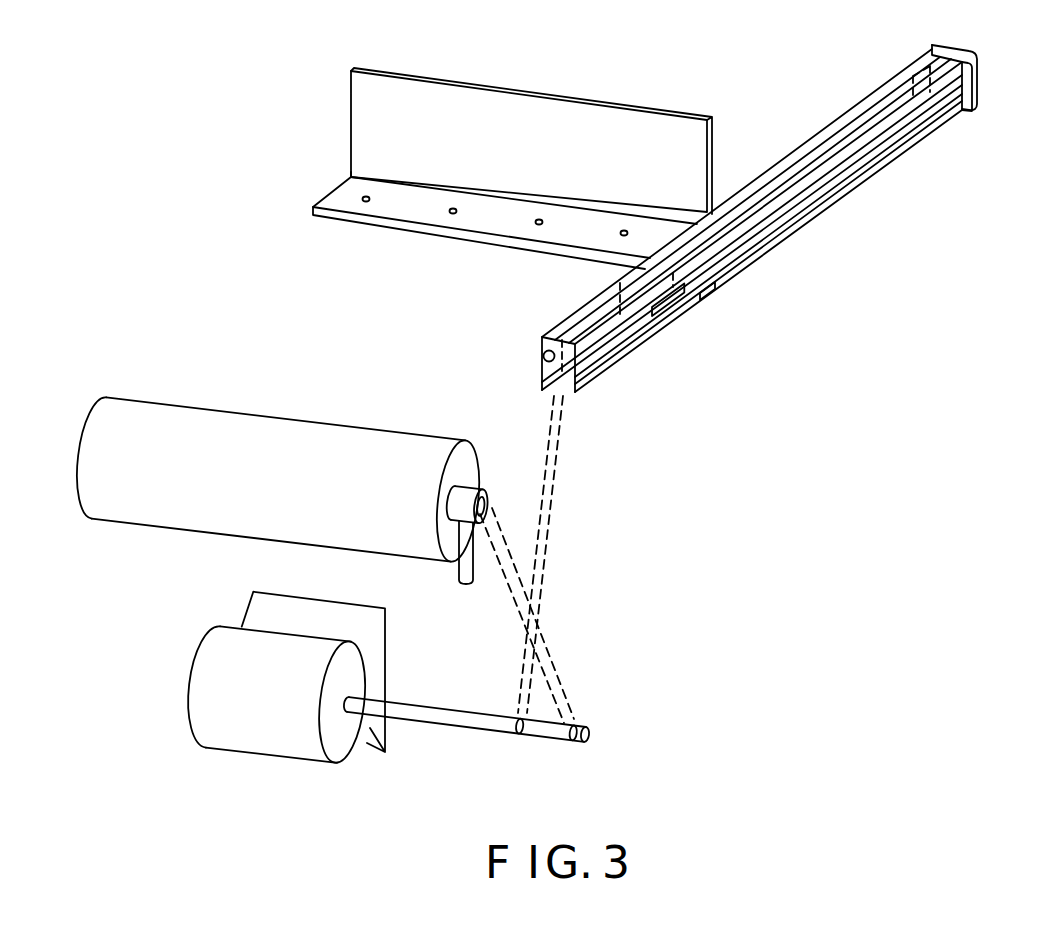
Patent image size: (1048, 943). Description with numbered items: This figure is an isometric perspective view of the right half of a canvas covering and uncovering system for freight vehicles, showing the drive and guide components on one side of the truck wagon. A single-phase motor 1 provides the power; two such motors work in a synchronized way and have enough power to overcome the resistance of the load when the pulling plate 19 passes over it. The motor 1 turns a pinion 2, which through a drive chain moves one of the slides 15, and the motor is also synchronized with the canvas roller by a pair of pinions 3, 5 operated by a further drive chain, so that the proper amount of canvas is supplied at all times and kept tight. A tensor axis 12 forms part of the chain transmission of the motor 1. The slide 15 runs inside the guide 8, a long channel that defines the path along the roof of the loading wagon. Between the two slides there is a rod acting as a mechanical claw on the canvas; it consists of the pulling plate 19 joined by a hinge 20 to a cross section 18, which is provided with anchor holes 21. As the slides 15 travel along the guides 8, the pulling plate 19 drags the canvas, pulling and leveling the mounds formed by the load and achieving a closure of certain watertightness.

The single-phase motor 1 is at (298, 762).
The pinion 2 is at (520, 743).
The pinion 3 is at (575, 722).
The pinion 5 is at (478, 488).
The guide 8 is at (807, 226).
The tensor axis 12 is at (980, 63).
The slide 15 is at (700, 307).
The cross section 18 is at (487, 243).
The pulling plate 19 is at (583, 96).
The hinge 20 is at (343, 178).
The anchor hole 21 is at (365, 205).